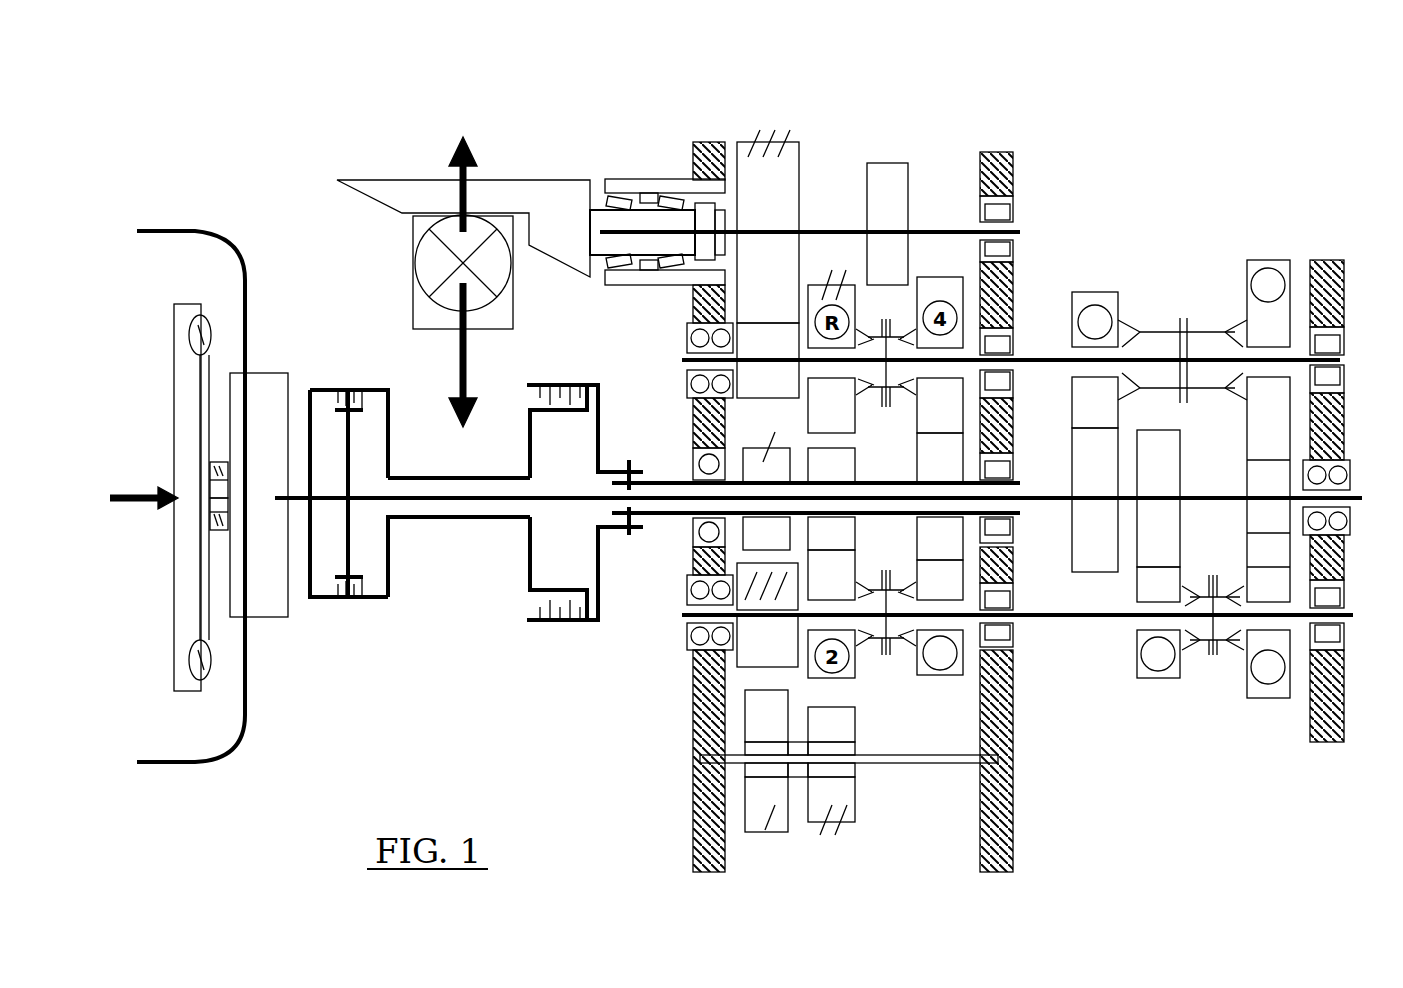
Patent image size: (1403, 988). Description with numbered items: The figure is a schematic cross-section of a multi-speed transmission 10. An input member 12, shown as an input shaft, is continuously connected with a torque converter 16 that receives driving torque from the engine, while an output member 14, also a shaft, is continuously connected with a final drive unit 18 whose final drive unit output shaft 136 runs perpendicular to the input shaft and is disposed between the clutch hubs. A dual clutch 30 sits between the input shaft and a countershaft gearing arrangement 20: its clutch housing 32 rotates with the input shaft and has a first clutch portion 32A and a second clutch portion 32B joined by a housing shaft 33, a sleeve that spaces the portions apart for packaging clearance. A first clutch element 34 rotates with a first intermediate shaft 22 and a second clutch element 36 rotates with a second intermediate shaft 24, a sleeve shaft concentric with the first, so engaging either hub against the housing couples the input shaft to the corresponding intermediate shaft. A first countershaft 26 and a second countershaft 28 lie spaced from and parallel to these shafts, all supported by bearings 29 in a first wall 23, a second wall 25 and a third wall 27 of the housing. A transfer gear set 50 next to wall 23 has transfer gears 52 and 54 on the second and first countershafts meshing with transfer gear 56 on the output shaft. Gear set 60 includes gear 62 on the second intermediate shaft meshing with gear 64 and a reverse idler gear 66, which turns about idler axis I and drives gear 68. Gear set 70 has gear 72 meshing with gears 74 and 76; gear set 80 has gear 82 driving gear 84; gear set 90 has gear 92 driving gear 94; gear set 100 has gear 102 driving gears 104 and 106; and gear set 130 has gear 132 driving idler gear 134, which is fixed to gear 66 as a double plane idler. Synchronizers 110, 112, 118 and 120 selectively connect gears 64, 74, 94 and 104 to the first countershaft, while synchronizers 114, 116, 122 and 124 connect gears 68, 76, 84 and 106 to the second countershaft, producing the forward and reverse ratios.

The multi-speed transmission 10 is at (275, 222).
The input member 12 is at (300, 500).
The output member 14 is at (832, 230).
The torque converter 16 is at (200, 611).
The final drive unit 18 is at (527, 160).
The countershaft gearing arrangement 20 is at (1083, 165).
The first intermediate shaft 22 is at (476, 500).
The first wall 23 is at (693, 712).
The second intermediate shaft 24 is at (668, 480).
The second wall 25 is at (1013, 832).
The first countershaft 26 is at (1062, 612).
The third wall 27 is at (1343, 722).
The second countershaft 28 is at (1045, 355).
The bearings 29 is at (672, 268).
The dual clutch 30 is at (467, 502).
The clutch housing 32 is at (390, 598).
The first clutch portion 32A is at (331, 388).
The second clutch portion 32B is at (530, 450).
The housing shaft 33 is at (428, 517).
The first clutch element 34 is at (350, 450).
The second clutch element 36 is at (568, 383).
The transfer gear set 50 is at (775, 213).
The transfer gear 52 is at (768, 360).
The transfer gear 54 is at (767, 641).
The transfer gear 56 is at (768, 226).
The gear set 60 is at (846, 813).
The gear 62 is at (831, 465).
The gear 64 is at (831, 575).
The reverse idler gear 66 is at (840, 840).
The gear 68 is at (831, 405).
The gear set 70 is at (945, 688).
The gear 72 is at (940, 458).
The gear 74 is at (940, 580).
The gear 76 is at (940, 405).
The gear set 80 is at (1103, 384).
The gear 82 is at (1095, 500).
The gear 84 is at (1095, 402).
The gear set 90 is at (1143, 598).
The gear 92 is at (1158, 532).
The gear 94 is at (1158, 584).
The gear set 100 is at (1252, 531).
The gear 102 is at (1268, 437).
The gear 104 is at (1268, 550).
The gear 106 is at (1268, 303).
The synchronizer 110 is at (865, 652).
The synchronizer 112 is at (900, 585).
The synchronizer 114 is at (862, 393).
The synchronizer 116 is at (900, 325).
The synchronizer 118 is at (1196, 650).
The synchronizer 120 is at (1232, 573).
The synchronizer 122 is at (1140, 392).
The synchronizer 124 is at (1237, 330).
The gear set 130 is at (758, 741).
The gear 132 is at (766, 533).
The idler gear 134 is at (773, 840).
The final drive unit output shaft 136 is at (458, 378).
The idler axis I is at (880, 768).